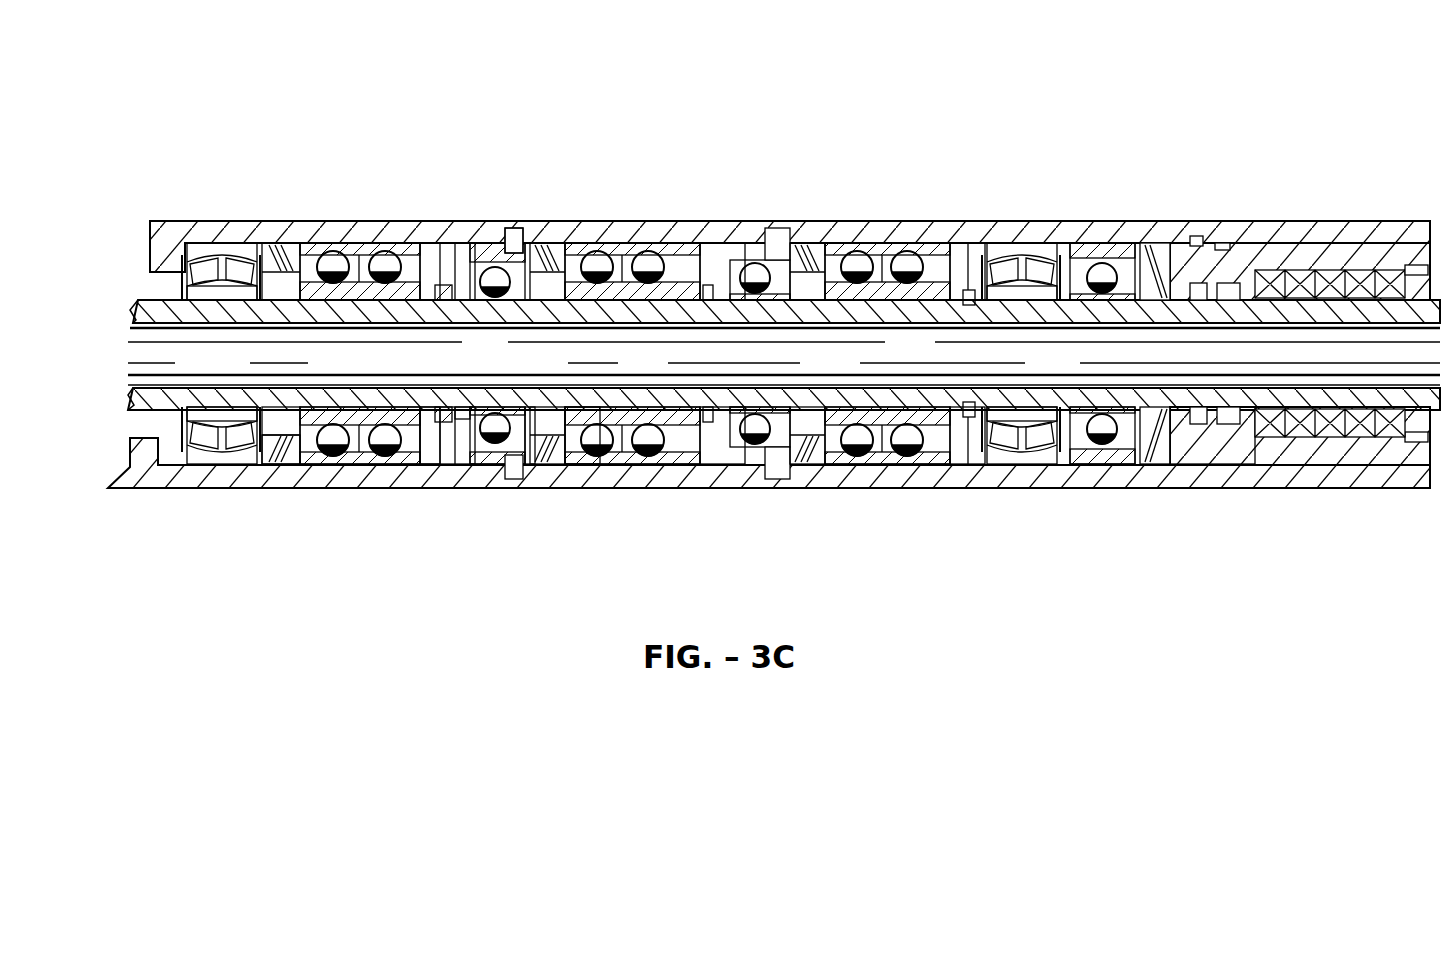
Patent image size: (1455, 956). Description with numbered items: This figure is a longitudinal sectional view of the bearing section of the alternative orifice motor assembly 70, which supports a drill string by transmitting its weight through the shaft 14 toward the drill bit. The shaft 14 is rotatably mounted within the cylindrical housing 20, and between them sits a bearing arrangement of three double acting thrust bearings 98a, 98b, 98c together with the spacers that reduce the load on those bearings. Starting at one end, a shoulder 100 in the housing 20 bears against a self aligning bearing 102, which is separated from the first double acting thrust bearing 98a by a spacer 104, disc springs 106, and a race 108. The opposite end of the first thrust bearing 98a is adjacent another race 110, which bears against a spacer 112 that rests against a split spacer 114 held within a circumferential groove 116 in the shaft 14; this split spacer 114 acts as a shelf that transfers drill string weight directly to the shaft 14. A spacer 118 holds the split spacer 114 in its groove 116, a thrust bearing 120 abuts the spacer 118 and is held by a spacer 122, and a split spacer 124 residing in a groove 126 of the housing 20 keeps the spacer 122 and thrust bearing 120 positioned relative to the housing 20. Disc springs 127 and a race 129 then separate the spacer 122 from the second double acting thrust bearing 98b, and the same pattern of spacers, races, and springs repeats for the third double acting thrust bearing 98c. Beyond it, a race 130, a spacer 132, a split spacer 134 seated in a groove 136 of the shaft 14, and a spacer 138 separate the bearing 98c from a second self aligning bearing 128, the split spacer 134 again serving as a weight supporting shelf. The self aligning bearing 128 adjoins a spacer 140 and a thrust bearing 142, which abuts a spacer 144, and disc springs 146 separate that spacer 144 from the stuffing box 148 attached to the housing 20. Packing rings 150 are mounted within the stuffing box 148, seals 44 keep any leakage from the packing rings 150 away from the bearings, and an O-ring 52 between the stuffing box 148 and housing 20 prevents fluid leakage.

The shaft assembly 70 is at (665, 108).
The shaft 14 is at (680, 300).
The housing 20 is at (900, 222).
The O-ring 52 is at (1196, 236).
The seals 44 is at (1228, 488).
The first double acting thrust bearing 98a is at (385, 468).
The second double acting thrust bearing 98b is at (642, 470).
The third double acting thrust bearing 98c is at (896, 470).
The shoulder 100 is at (178, 470).
The self aligning bearing 102 is at (228, 490).
The spacer 104 is at (256, 376).
The disc springs 106 is at (300, 488).
The race 108 is at (278, 455).
The race 110 is at (400, 450).
The spacer 112 is at (402, 490).
The split spacer 114 is at (440, 420).
The circumferential groove 116 is at (462, 385).
The spacer 118 is at (485, 490).
The thrust bearing 120 is at (496, 498).
The spacer 122 is at (525, 470).
The split spacer 124 is at (508, 222).
The groove 126 is at (518, 212).
The disc springs 127 is at (550, 480).
The race 129 is at (562, 450).
The race 130 is at (908, 488).
The spacer 132 is at (945, 450).
The split spacer 134 is at (962, 300).
The groove 136 is at (974, 330).
The spacer 138 is at (962, 488).
The self aligning bearing 128 is at (1012, 488).
The spacer 140 is at (1048, 488).
The thrust bearing 142 is at (1110, 488).
The spacer 144 is at (1160, 488).
The disc springs 146 is at (1182, 488).
The stuffing box 148 is at (1410, 468).
The packing rings 150 is at (1328, 468).